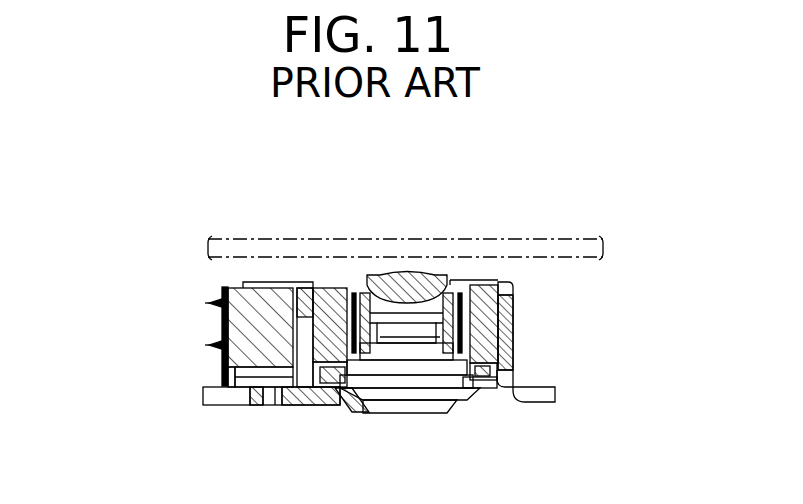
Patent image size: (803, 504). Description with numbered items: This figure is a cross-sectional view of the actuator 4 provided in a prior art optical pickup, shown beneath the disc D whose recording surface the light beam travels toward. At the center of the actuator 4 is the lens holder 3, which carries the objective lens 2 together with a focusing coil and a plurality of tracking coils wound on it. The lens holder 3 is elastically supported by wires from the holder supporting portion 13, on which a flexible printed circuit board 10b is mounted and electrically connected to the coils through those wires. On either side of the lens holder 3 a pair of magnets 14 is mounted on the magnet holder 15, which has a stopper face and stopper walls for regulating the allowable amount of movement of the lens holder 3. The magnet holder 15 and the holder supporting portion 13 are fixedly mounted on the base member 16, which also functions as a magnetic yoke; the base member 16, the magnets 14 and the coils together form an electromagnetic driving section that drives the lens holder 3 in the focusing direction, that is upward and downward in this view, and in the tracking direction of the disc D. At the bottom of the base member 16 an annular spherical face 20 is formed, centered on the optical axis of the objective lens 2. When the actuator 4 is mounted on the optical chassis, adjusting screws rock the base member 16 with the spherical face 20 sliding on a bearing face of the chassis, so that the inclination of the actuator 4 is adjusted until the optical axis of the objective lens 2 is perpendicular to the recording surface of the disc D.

The objective lens 2 is at (417, 272).
The lens holder 3 is at (412, 355).
The actuator 4 is at (556, 331).
The flexible printed circuit board 10b is at (222, 291).
The holder supporting portion 13 is at (267, 310).
The magnets 14 is at (321, 300).
The magnet holder 15 is at (485, 388).
The base member 16 is at (210, 397).
The annular spherical face 20 is at (346, 408).
The disc D is at (588, 236).